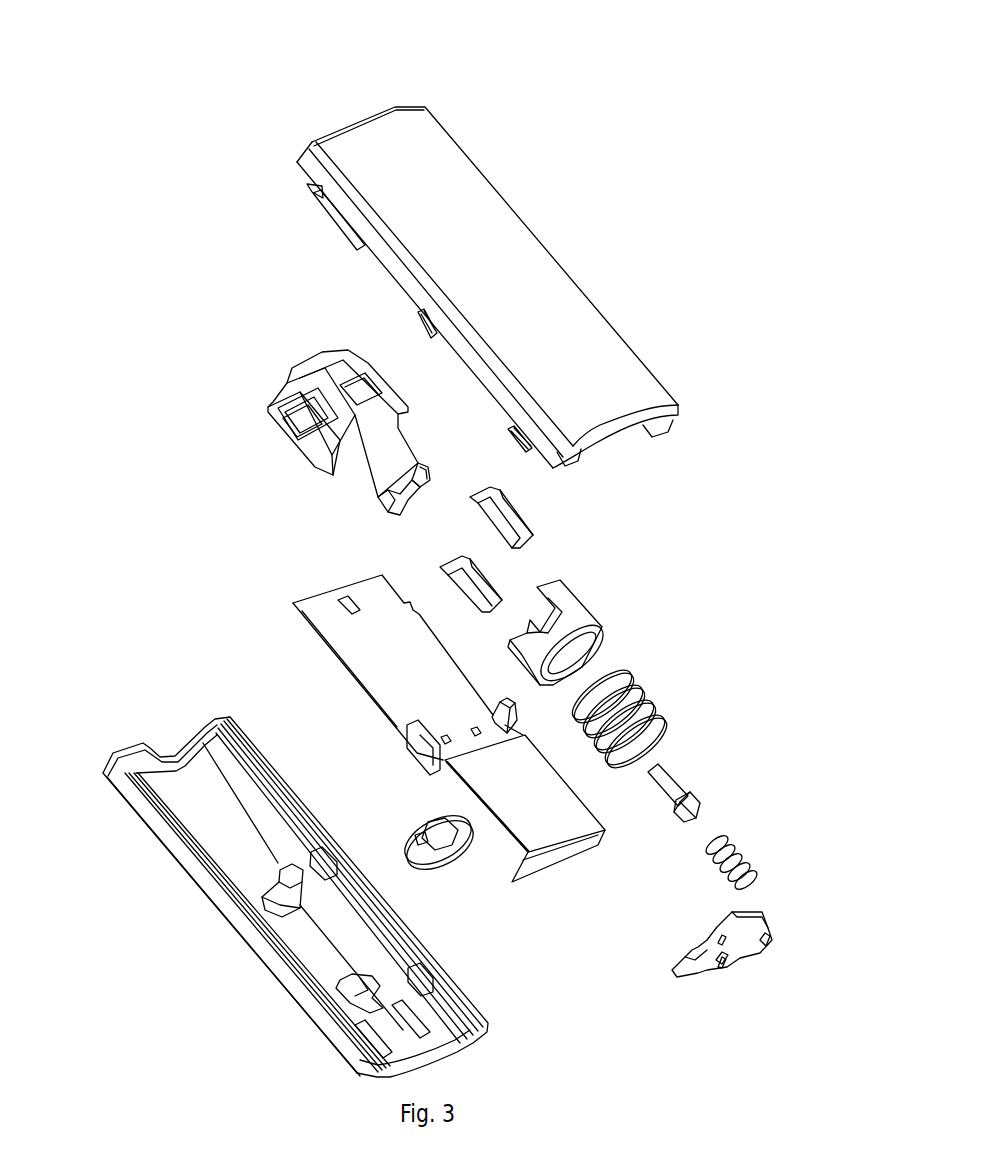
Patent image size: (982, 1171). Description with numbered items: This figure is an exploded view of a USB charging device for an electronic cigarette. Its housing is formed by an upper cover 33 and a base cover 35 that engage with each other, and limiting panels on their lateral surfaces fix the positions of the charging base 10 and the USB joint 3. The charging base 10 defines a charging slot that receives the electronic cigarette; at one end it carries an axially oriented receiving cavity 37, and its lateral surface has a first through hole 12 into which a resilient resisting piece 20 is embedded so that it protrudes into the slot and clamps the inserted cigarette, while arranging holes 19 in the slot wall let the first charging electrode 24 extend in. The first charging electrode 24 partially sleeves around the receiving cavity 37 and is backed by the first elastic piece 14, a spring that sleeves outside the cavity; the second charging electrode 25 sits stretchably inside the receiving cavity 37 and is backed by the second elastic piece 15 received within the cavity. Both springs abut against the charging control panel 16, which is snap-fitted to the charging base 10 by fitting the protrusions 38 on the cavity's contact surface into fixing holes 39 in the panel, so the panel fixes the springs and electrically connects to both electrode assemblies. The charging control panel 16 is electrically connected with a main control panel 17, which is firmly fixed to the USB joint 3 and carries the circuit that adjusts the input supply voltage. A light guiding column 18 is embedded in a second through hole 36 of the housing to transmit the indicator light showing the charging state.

The upper cover 33 is at (360, 124).
The base cover 35 is at (177, 765).
The second through hole 36 is at (342, 989).
The main control panel 17 is at (327, 622).
The USB joint 3 is at (560, 837).
The light guiding column 18 is at (460, 860).
The charging base 10 is at (315, 368).
The arranging holes 19 is at (360, 383).
The first through hole 12 is at (276, 423).
The receiving cavity 37 is at (417, 476).
The protrusions 38 is at (375, 492).
The resilient resisting piece 20 is at (470, 518).
The first charging electrode 24 is at (555, 647).
The first elastic piece 14 is at (632, 685).
The second charging electrode 25 is at (684, 805).
The second elastic piece 15 is at (737, 875).
The charging control panel 16 is at (743, 942).
The fixing holes 39 is at (722, 968).